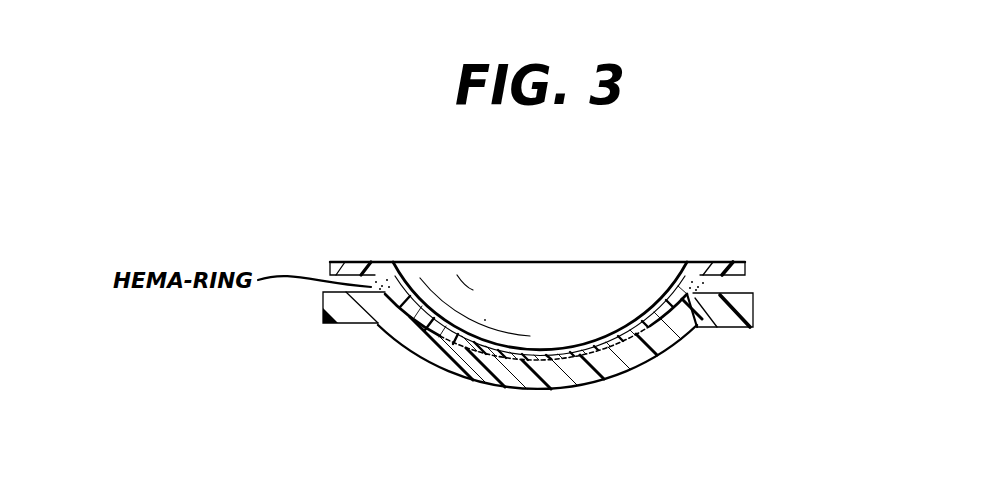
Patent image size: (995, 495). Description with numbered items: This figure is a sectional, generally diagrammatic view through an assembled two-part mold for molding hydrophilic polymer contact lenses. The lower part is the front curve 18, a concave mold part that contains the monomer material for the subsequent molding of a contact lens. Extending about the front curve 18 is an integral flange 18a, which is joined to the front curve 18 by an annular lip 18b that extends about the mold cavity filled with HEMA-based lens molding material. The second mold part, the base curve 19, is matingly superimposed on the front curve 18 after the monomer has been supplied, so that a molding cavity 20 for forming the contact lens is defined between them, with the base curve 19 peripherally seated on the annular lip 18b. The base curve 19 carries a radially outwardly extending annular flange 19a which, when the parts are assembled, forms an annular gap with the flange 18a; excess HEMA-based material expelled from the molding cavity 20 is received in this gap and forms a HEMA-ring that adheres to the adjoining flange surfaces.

The front curve 18 is at (527, 388).
The integral flange 18a is at (735, 287).
The annular lip 18b is at (700, 327).
The base curve 19 is at (556, 344).
The annular flange 19a is at (722, 264).
The molding cavity 20 is at (440, 330).